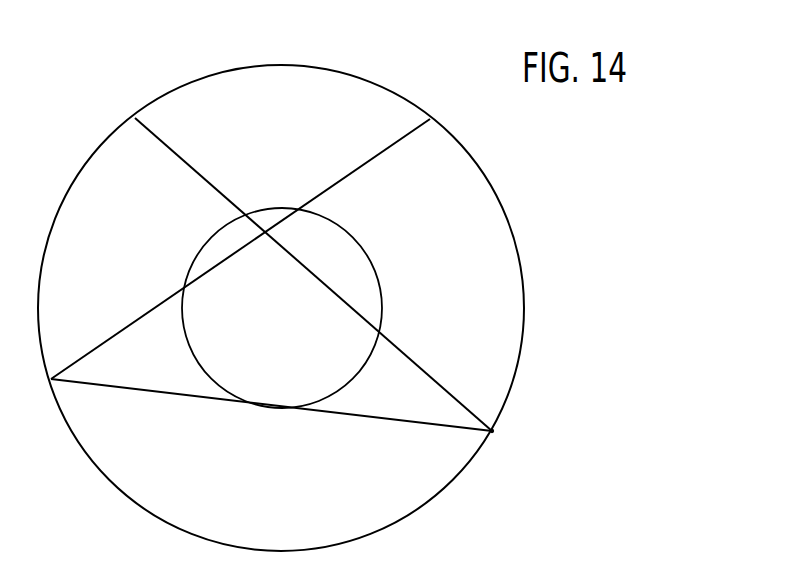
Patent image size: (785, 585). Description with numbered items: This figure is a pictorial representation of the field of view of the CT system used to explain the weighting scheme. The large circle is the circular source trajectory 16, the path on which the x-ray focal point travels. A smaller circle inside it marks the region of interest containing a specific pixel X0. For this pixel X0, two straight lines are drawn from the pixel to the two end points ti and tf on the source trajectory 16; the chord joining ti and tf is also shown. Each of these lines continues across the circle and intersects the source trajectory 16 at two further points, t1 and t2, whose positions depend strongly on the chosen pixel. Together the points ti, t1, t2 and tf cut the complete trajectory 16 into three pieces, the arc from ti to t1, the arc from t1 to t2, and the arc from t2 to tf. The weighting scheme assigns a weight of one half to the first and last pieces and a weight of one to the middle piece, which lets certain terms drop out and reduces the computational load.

The circular source trajectory 16 is at (523, 288).
The pixel X0 is at (282, 289).
The intersection point t1 is at (255, 233).
The intersection point t2 is at (305, 258).
The end point tf is at (260, 404).
The end point ti is at (506, 448).